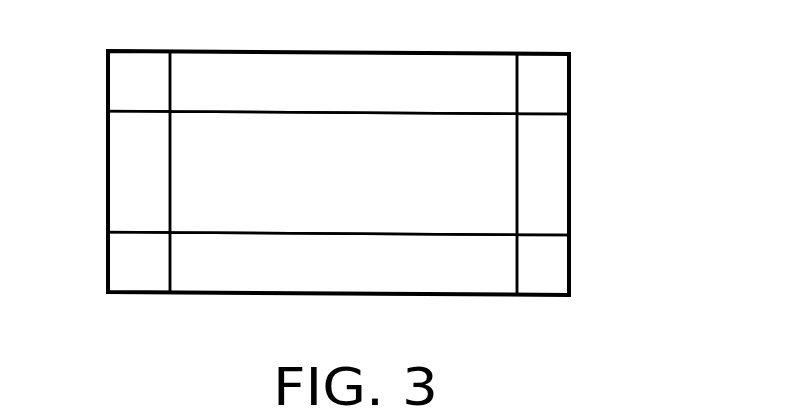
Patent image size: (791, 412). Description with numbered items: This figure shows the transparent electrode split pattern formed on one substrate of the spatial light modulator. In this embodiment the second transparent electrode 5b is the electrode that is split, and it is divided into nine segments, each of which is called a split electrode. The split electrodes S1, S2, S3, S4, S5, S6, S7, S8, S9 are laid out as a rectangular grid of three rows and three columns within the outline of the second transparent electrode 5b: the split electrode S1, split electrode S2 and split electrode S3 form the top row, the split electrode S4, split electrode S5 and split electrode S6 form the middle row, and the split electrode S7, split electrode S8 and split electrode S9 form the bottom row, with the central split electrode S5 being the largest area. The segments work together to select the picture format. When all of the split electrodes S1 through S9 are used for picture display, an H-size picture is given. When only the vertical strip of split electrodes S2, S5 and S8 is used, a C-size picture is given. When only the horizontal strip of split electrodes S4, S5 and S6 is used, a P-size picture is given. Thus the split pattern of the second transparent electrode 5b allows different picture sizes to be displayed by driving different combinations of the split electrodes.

The second transparent electrode 5b is at (382, 179).
The split electrode S1 is at (141, 62).
The split electrode S2 is at (428, 70).
The split electrode S3 is at (542, 72).
The split electrode S4 is at (127, 163).
The split electrode S5 is at (280, 130).
The split electrode S6 is at (553, 165).
The split electrode S7 is at (120, 262).
The split electrode S8 is at (421, 280).
The split electrode S9 is at (555, 262).